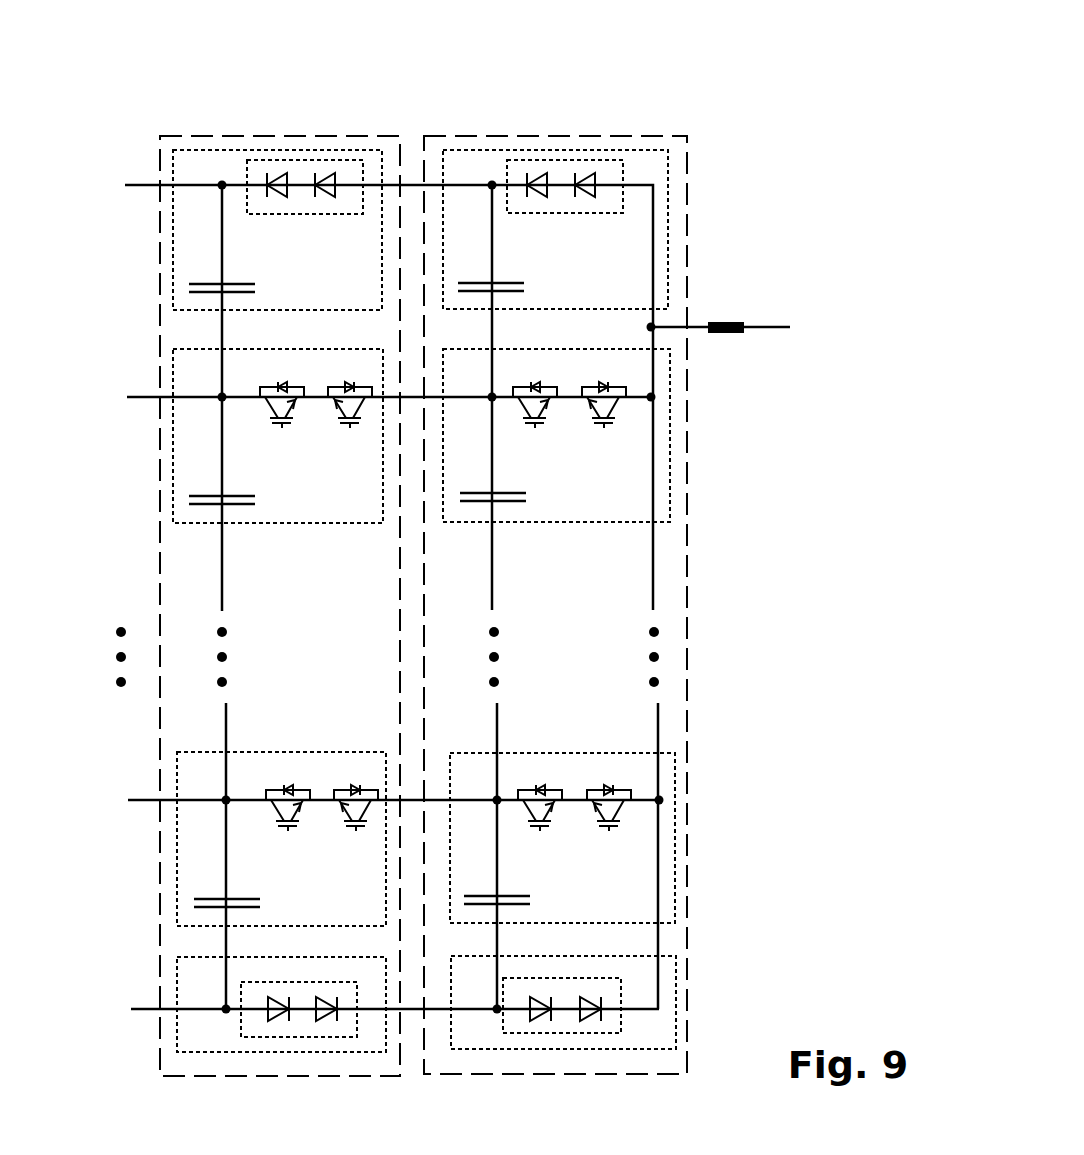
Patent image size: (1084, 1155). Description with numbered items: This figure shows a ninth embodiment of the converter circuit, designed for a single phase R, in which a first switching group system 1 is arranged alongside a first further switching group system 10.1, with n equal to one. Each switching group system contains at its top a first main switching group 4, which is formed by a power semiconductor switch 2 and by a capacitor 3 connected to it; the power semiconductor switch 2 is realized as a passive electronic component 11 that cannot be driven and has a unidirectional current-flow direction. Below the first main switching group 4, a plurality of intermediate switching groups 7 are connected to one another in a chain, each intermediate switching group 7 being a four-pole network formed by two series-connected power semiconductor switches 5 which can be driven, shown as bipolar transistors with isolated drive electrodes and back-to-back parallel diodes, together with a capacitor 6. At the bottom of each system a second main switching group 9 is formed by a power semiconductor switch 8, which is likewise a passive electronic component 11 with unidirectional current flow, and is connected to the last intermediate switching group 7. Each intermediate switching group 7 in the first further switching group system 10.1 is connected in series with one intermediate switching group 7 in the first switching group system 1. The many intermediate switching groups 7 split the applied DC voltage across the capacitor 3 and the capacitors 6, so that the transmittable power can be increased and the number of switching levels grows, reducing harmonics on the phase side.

The first switching group system 1 is at (485, 136).
The first further switching group system 10.1 is at (373, 136).
The power semiconductor switch 2 is at (623, 157).
The capacitor 3 is at (503, 281).
The first main switching group 4 is at (663, 151).
The power semiconductor switches 5 is at (626, 385).
The capacitor 6 is at (785, 826).
The intermediate switching group 7 is at (785, 760).
The power semiconductor switch 8 is at (782, 927).
The second main switching group 9 is at (782, 890).
The passive electronic component 11 is at (335, 172).
The phase R is at (767, 331).